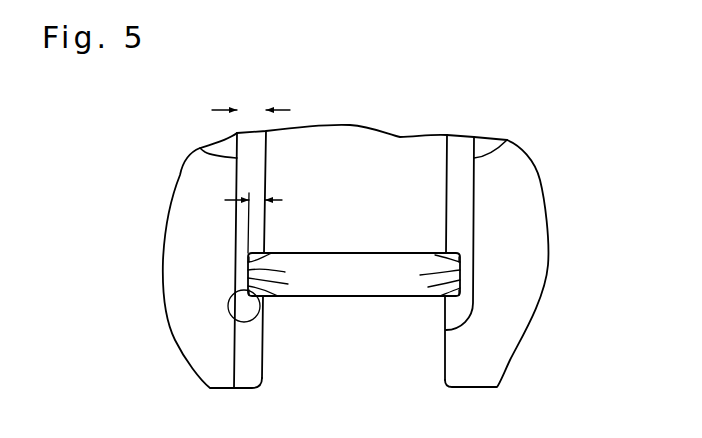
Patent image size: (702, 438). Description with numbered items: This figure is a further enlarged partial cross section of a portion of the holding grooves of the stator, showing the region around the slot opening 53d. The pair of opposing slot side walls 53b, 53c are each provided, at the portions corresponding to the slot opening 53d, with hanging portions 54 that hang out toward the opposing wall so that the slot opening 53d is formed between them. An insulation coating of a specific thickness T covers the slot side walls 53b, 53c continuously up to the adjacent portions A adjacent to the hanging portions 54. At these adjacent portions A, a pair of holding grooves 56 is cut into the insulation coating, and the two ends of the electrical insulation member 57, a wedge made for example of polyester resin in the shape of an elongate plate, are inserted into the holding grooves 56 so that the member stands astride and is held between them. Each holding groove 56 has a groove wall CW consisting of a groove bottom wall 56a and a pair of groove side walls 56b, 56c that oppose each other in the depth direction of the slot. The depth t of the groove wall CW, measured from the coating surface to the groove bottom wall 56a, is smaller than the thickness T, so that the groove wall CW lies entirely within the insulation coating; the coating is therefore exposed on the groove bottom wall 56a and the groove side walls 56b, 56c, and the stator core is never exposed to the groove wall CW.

The slot side wall 53b is at (200, 148).
The slot side wall 53c is at (507, 140).
The slot opening 53d is at (347, 370).
The hanging portion 54 is at (262, 368).
The holding groove 56 is at (248, 280).
The groove bottom wall 56a is at (263, 263).
The groove side wall 56b is at (250, 262).
The groove side wall 56c is at (240, 292).
The electrical insulation member 57 is at (347, 298).
The groove wall CW is at (263, 290).
The adjacent portion A is at (250, 315).
The thickness of the insulation coating T is at (258, 109).
The depth of the groove wall t is at (259, 193).